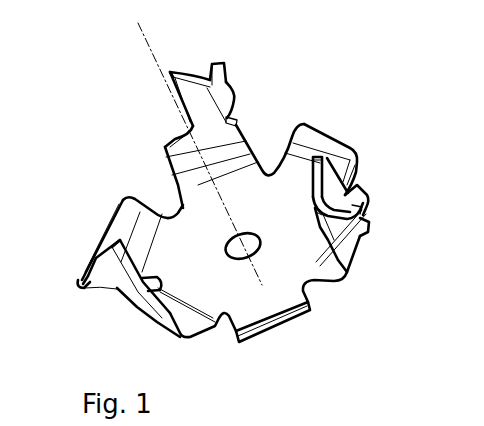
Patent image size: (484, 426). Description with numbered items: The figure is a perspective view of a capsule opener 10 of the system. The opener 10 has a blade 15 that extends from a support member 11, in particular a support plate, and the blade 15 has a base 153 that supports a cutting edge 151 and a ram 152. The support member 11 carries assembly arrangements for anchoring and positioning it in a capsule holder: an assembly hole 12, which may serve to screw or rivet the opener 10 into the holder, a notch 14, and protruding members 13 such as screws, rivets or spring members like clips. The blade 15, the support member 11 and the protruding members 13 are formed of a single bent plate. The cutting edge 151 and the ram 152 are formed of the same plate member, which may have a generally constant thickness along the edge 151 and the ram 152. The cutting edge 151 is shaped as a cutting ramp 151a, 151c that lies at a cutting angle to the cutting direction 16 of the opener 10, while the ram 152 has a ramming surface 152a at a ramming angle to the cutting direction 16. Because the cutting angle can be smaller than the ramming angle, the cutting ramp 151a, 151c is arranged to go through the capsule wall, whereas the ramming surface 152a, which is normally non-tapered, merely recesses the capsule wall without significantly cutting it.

The opener 10 is at (94, 99).
The support member 11 is at (230, 285).
The assembly hole 12 is at (225, 258).
The protruding member 13 is at (324, 137).
The notch 14 is at (182, 210).
The blade 15 is at (240, 97).
The cutting direction 16 is at (152, 57).
The cutting edge 151 is at (173, 72).
The cutting ramp 151a is at (312, 180).
The cutting ramp 151c is at (316, 212).
The ram 152 is at (215, 68).
The ramming surface 152a is at (354, 226).
The base 153 is at (173, 138).